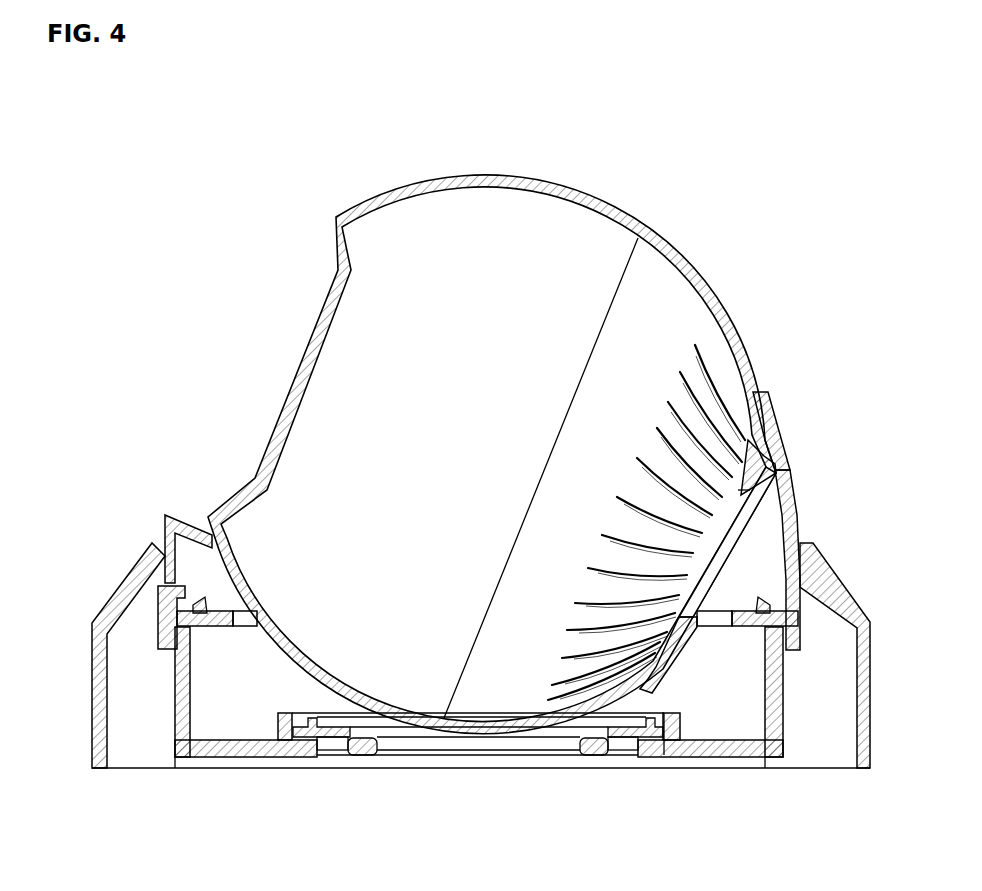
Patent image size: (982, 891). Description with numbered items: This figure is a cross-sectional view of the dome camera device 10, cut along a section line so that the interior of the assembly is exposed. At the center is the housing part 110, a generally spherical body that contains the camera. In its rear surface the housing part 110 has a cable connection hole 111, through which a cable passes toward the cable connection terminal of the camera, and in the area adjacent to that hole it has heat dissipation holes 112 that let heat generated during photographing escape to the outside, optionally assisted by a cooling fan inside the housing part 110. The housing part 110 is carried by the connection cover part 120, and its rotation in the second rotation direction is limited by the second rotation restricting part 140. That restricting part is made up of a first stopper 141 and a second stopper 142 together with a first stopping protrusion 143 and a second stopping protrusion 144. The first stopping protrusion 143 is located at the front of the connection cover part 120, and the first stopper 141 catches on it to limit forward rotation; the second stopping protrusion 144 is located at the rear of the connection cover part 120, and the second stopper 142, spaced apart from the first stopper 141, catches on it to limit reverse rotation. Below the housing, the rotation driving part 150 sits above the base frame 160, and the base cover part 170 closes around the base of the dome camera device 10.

The dome camera device 10 is at (556, 107).
The housing part 110 is at (432, 178).
The cable connection hole 111 is at (728, 524).
The heat dissipation holes 112 is at (720, 380).
The connection cover part 120 is at (789, 537).
The second rotation restricting part 140 is at (830, 443).
The first stopper 141 is at (653, 683).
The second stopper 142 is at (762, 473).
The first stopping protrusion 143 is at (198, 532).
The second stopping protrusion 144 is at (772, 448).
The rotation driving part 150 is at (332, 733).
The base frame 160 is at (208, 757).
The base cover part 170 is at (118, 600).